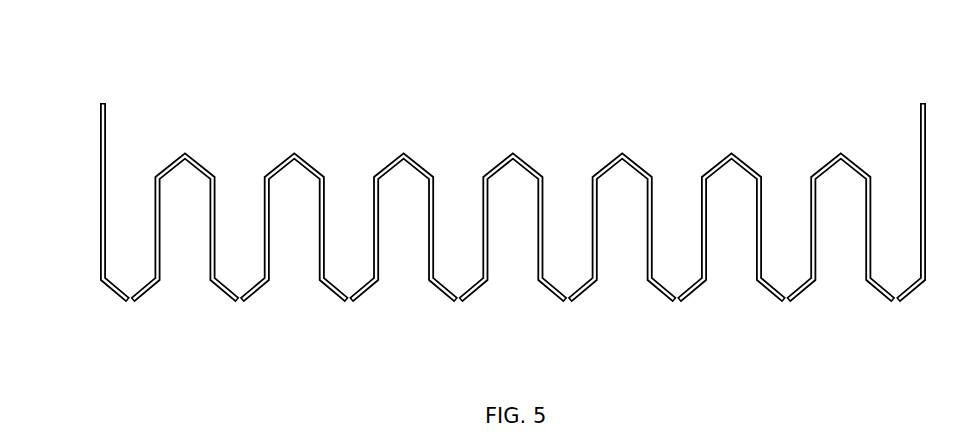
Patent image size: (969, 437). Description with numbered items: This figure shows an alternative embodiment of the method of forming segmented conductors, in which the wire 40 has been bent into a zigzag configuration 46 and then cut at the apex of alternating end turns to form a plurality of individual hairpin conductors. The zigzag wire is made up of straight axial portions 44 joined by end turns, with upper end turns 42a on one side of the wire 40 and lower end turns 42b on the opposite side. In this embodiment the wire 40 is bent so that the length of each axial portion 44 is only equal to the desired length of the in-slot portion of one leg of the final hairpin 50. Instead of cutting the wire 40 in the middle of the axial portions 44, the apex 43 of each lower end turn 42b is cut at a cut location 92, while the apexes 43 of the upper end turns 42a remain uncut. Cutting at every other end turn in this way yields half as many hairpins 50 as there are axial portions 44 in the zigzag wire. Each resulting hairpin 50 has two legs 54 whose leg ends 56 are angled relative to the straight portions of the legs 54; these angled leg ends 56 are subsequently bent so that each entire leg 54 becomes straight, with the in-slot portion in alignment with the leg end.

The wire 40 is at (100, 140).
The upper end turns 42a is at (613, 158).
The lower end turns 42b is at (221, 293).
The apex 43 is at (404, 151).
The axial portions 44 is at (373, 212).
The zigzag configuration 46 is at (474, 202).
The hairpin 50 is at (827, 158).
The legs 54 is at (816, 240).
The leg ends 56 is at (803, 292).
The cut location 92 is at (771, 311).